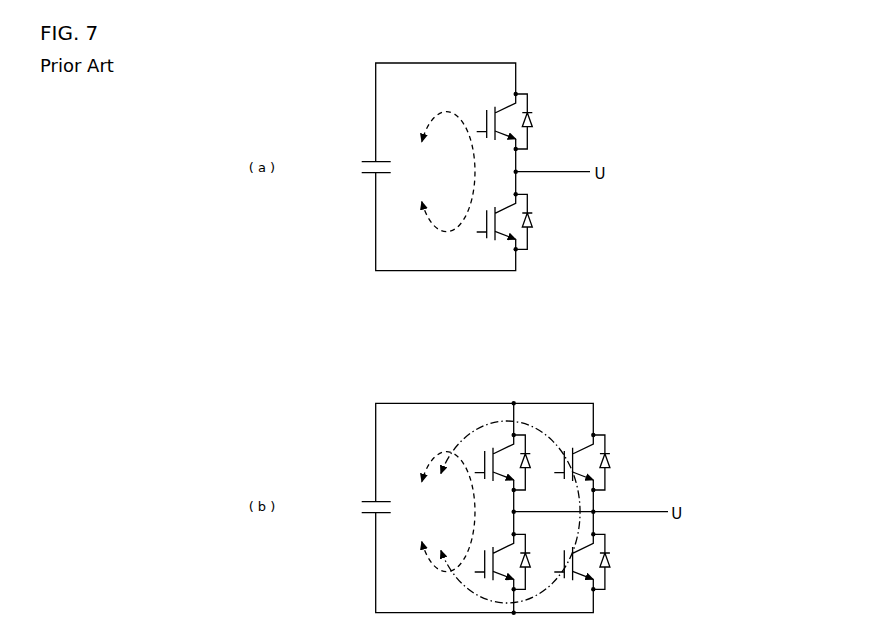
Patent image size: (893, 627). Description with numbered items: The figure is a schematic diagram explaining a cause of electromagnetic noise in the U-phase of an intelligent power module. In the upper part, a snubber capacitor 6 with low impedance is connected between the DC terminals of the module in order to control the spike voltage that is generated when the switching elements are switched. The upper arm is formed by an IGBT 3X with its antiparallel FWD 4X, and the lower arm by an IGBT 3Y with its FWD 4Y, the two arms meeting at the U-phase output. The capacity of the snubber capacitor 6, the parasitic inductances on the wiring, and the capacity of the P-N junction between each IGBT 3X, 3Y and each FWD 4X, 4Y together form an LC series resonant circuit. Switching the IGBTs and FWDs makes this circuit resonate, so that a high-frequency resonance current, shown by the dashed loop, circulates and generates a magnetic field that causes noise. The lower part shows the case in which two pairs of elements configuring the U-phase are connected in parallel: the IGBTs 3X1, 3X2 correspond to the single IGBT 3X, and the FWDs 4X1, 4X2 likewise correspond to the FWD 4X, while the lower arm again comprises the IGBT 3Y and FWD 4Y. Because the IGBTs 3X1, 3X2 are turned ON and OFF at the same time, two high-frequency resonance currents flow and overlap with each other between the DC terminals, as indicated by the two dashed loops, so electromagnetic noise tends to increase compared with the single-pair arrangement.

The snubber capacitor 6 is at (367, 160).
The IGBT 3X is at (507, 108).
The FWD 4X is at (528, 112).
The IGBT 3Y is at (507, 208).
The FWD 4Y is at (528, 227).
The IGBT 3X1 is at (503, 447).
The FWD 4X1 is at (528, 477).
The IGBT 3X2 is at (583, 448).
The FWD 4X2 is at (607, 452).